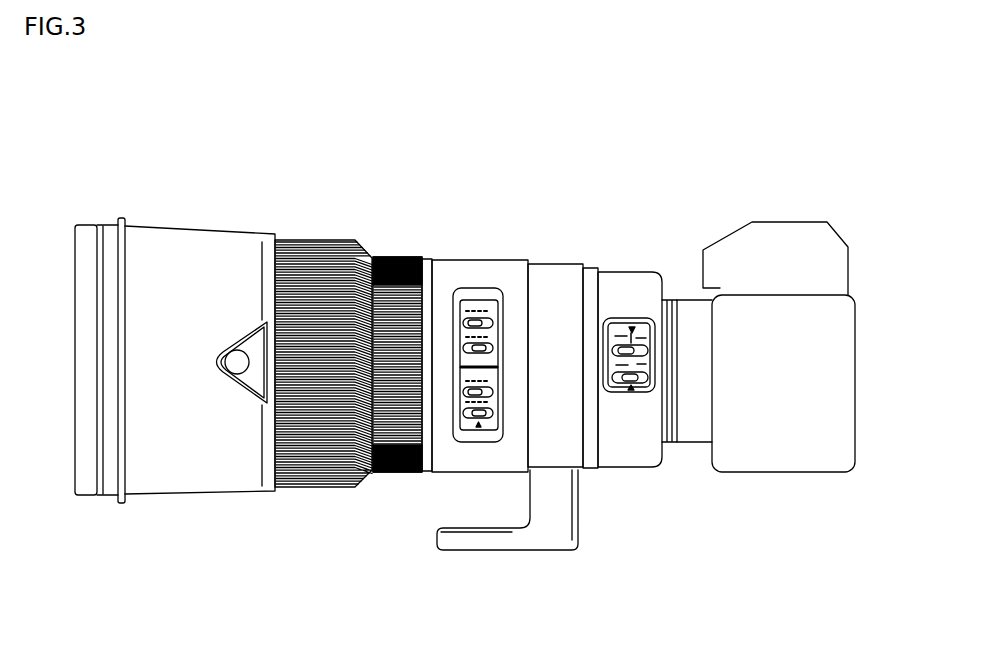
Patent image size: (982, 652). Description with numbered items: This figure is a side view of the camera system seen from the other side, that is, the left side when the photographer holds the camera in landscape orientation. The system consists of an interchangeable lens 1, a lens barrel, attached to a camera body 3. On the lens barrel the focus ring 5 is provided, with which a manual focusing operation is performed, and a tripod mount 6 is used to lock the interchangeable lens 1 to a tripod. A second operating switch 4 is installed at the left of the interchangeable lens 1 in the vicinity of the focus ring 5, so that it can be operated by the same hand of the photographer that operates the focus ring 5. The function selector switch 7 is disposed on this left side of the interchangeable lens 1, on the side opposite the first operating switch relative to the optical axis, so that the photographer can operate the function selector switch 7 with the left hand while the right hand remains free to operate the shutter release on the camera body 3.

The interchangeable lens 1 is at (455, 260).
The camera body 3 is at (803, 227).
The second operating switch 4 is at (237, 365).
The focus ring 5 is at (328, 240).
The tripod mount 6 is at (547, 548).
The function selector switch 7 is at (612, 333).